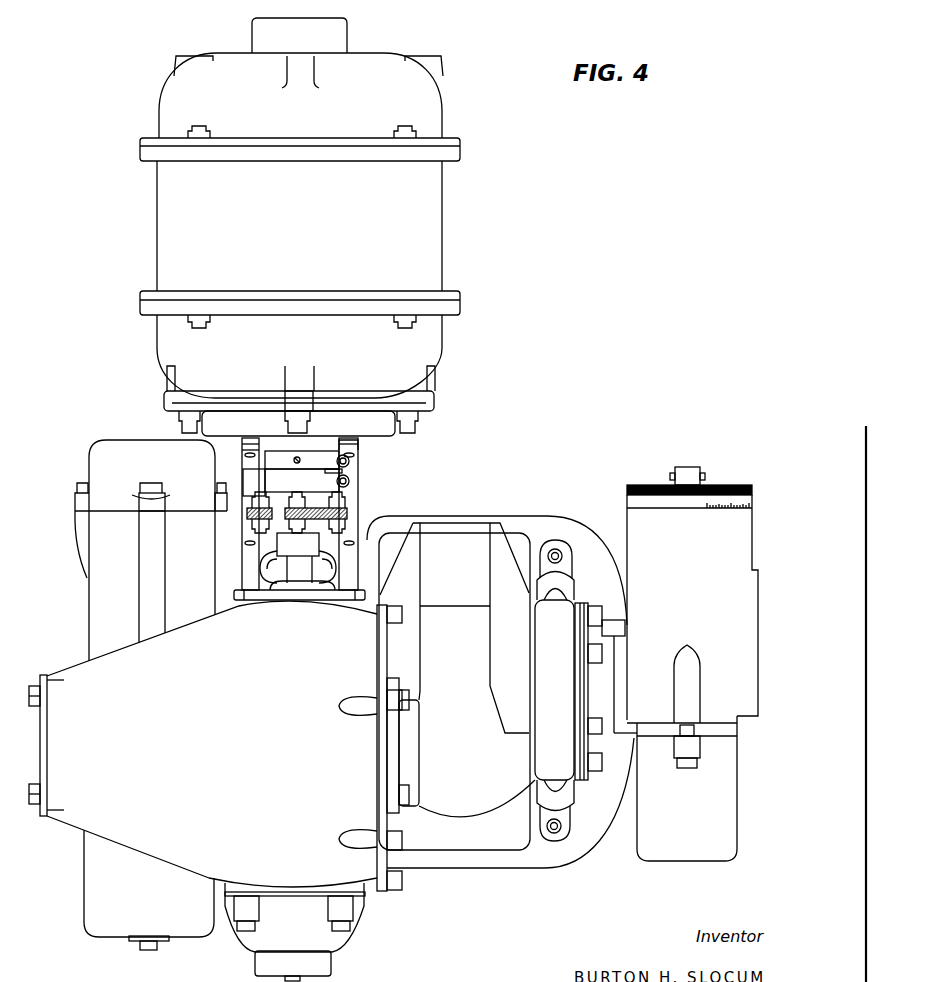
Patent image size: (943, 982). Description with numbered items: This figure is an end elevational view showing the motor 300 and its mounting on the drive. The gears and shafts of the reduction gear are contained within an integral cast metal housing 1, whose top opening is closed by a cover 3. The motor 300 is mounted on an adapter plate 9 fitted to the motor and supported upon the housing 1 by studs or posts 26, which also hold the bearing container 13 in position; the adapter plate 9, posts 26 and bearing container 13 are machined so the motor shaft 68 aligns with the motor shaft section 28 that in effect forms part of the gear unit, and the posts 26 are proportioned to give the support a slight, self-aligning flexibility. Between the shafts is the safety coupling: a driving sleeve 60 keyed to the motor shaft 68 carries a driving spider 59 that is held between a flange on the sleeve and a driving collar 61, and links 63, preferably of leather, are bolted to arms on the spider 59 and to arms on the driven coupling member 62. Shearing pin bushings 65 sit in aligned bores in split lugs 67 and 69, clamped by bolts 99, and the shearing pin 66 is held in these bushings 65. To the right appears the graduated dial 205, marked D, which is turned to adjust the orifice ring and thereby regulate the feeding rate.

The housing 1 is at (87, 592).
The cover 3 is at (87, 460).
The adapter plate 9 is at (432, 400).
The bearing container 13 is at (215, 596).
The posts 26 is at (353, 478).
The drive shaft 28 is at (273, 599).
The driving spider 59 is at (264, 477).
The driving sleeve 60 is at (277, 441).
The driving collar 61 is at (253, 443).
The driven coupling member 62 is at (235, 540).
The links 63 is at (360, 507).
The shearing pin bushings 65 is at (357, 447).
The shearing pin 66 is at (348, 448).
The split lug 67 is at (323, 453).
The motor shaft 68 is at (305, 436).
The split lug 69 is at (327, 479).
The bolts 99 is at (352, 458).
The graduated dial 205 is at (625, 500).
The motor 300 is at (445, 222).
The indicator dial D is at (766, 497).